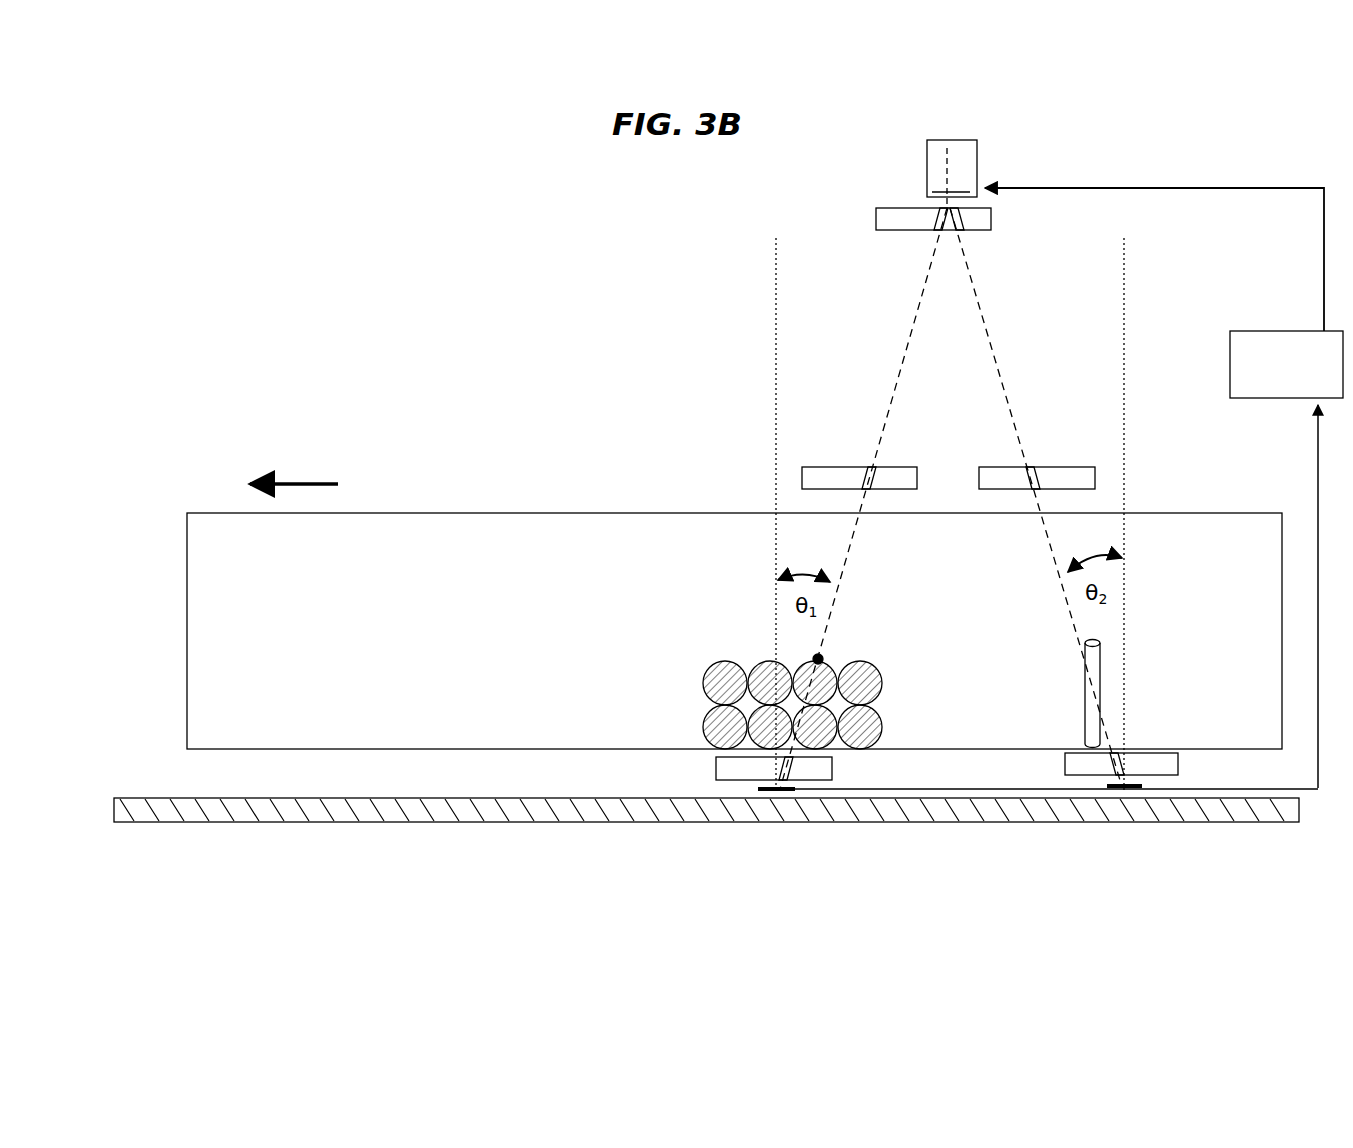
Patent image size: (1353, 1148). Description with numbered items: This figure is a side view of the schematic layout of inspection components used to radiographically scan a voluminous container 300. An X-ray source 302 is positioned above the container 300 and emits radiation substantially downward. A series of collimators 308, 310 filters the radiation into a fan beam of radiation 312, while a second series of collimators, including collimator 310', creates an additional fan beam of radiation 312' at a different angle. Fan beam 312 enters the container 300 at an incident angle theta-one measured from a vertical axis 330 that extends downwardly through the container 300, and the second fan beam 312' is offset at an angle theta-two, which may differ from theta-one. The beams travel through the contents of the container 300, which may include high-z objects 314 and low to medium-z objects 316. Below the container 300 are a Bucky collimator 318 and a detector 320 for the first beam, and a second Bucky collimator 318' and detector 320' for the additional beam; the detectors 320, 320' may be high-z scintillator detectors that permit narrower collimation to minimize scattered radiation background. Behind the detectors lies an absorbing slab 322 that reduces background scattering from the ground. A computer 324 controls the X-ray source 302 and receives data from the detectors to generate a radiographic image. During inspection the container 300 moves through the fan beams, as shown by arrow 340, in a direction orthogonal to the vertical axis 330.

The voluminous container 300 is at (413, 513).
The X-ray source 302 is at (977, 163).
The collimator 308 is at (906, 208).
The collimator 310 is at (902, 450).
The collimator 310' is at (1105, 470).
The fan beam of radiation 312 is at (863, 498).
The additional fan beam of radiation 312' is at (1036, 497).
The high-z objects 314 is at (822, 656).
The low to medium-z objects 316 is at (1085, 708).
The Bucky collimator 318 is at (723, 744).
The Bucky collimator 318' is at (1150, 724).
The detector 320 is at (749, 843).
The detector 320' is at (1085, 835).
The absorbing slab 322 is at (538, 802).
The computer 324 is at (1256, 333).
The vertical axis 330 is at (776, 450).
The arrow 340 is at (295, 480).